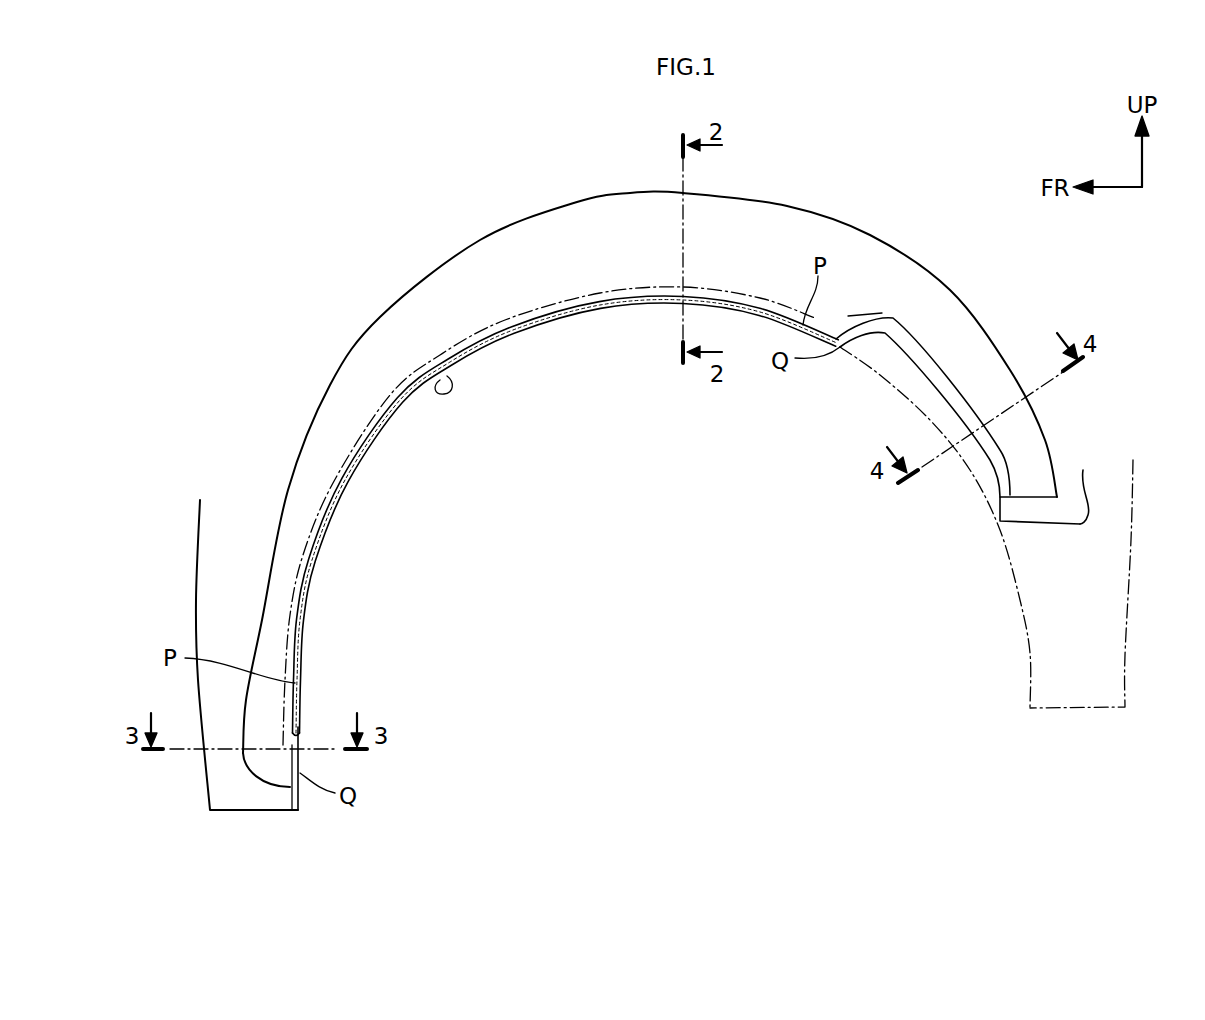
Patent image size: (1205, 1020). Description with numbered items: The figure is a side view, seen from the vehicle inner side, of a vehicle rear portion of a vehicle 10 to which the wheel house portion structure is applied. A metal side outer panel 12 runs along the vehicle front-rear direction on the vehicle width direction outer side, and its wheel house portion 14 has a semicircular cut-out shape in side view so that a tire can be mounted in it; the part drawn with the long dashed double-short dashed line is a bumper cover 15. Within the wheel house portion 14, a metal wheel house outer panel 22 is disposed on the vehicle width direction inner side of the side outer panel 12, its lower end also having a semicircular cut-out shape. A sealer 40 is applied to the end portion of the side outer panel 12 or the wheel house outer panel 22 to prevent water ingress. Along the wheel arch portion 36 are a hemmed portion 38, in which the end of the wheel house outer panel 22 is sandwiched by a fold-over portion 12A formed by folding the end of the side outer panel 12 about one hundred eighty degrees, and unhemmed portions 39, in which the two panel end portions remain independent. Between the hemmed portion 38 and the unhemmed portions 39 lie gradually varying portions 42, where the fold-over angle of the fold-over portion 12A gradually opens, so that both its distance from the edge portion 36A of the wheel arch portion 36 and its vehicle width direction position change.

The vehicle 10 is at (655, 479).
The side outer panel 12 is at (566, 515).
The fold-over portion 12A is at (567, 317).
The wheel house portion 14 is at (705, 452).
The bumper cover 15 is at (1113, 680).
The wheel house outer panel 22 is at (608, 210).
The wheel arch portion 36 is at (388, 311).
The edge portion 36A is at (447, 376).
The hemmed portion 38 is at (478, 363).
The unhemmed portions 39 is at (847, 365).
The sealer 40 is at (724, 295).
The gradually varying portions 42 is at (837, 336).